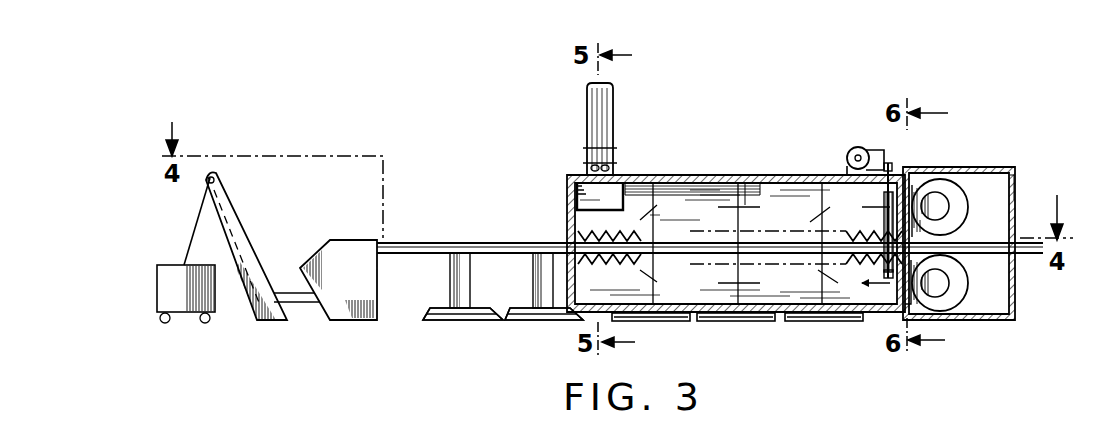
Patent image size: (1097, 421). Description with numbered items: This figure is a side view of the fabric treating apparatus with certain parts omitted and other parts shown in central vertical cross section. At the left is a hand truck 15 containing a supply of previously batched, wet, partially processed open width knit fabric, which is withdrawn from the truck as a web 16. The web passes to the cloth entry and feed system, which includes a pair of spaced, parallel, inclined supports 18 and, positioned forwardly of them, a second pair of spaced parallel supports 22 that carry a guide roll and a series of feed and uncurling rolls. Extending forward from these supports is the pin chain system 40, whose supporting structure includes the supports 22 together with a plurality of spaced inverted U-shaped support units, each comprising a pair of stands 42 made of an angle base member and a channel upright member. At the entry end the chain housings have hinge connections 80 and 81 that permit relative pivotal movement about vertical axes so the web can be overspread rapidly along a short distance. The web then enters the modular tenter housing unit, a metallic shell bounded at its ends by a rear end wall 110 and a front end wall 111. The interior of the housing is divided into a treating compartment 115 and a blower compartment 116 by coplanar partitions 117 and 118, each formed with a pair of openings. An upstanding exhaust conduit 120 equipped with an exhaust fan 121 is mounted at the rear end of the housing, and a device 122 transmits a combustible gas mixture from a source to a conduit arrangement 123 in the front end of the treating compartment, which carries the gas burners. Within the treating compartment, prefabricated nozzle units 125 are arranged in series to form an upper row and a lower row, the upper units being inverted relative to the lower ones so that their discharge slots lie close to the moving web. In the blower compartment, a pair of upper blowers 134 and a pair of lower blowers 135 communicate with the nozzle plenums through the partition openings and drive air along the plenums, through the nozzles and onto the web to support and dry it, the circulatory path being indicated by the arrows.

The hand truck 15 is at (157, 278).
The web 16 is at (198, 220).
The inclined supports 18 is at (248, 233).
The supports 22 is at (326, 312).
The pin chain system 40 is at (500, 240).
The stands 42 is at (500, 322).
The hinge connection 80 is at (540, 243).
The hinge connection 81 is at (462, 243).
The rear end wall 110 is at (572, 296).
The front end wall 111 is at (1017, 192).
The treating compartment 115 is at (748, 190).
The blower compartment 116 is at (962, 172).
The partition 117 is at (913, 172).
The partition 118 is at (914, 302).
The exhaust conduit 120 is at (589, 126).
The exhaust fan 121 is at (615, 170).
The gas transmitting device 122 is at (872, 153).
The conduit arrangement 123 is at (885, 204).
The nozzle units 125 is at (845, 183).
The upper blowers 134 is at (967, 222).
The lower blowers 135 is at (967, 298).